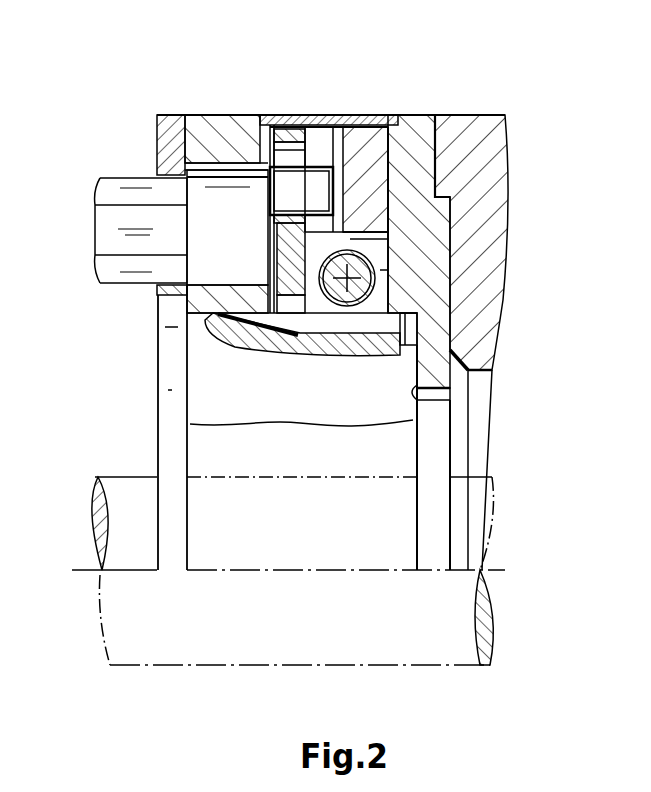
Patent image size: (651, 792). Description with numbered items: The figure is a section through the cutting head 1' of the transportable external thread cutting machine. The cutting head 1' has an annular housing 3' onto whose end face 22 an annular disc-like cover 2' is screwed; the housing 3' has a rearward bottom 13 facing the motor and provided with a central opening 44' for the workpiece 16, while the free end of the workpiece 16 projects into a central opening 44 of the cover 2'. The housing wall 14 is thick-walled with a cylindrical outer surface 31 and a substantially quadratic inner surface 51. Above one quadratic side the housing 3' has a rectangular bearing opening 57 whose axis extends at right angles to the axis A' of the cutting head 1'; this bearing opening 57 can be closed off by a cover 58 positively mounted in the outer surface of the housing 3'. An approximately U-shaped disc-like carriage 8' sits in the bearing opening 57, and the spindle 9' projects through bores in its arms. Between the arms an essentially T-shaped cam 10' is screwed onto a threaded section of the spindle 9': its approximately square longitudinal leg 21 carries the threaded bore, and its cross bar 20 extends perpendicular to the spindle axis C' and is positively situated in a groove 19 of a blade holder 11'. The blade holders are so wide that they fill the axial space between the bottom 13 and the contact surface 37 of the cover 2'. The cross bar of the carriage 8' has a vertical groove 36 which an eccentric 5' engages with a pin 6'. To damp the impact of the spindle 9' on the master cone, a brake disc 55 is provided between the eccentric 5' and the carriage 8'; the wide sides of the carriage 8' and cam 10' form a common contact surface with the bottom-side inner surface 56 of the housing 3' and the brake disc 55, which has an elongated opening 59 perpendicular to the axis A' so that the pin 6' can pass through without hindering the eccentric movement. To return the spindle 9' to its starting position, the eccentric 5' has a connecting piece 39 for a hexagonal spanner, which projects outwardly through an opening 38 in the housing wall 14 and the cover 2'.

The annular housing 3' is at (320, 85).
The contact surface 37 is at (190, 128).
The rectangular bearing opening 57 is at (275, 117).
The pin 6' is at (289, 124).
The vertical groove 36 is at (323, 143).
The cover 58 is at (390, 117).
The housing wall 14 is at (418, 155).
The cylindrical outer surface 31 is at (466, 117).
The end face 22 is at (185, 127).
The annular disc-like cover 2' is at (173, 155).
The connecting piece 39 is at (97, 179).
The eccentric 5' is at (229, 227).
The brake disc 55 is at (268, 270).
The elongated opening 59 is at (278, 238).
The inner surface 56 is at (428, 408).
The opening 38 is at (168, 286).
The carriage 8' is at (447, 193).
The cam 10' is at (448, 226).
The longitudinal leg 21 is at (388, 256).
The spindle 9' is at (362, 272).
The cutting head 1' is at (142, 427).
The quadratic inner surface 51 is at (223, 333).
The groove 19 is at (246, 320).
The cross bar 20 is at (322, 327).
The spindle axis C' is at (347, 344).
The rearward bottom 13 is at (435, 352).
The blade holder 11' is at (262, 415).
The central opening 44 is at (256, 462).
The central opening 44' is at (478, 457).
The workpiece 16 is at (145, 516).
The axis of the cutting head A' is at (279, 544).